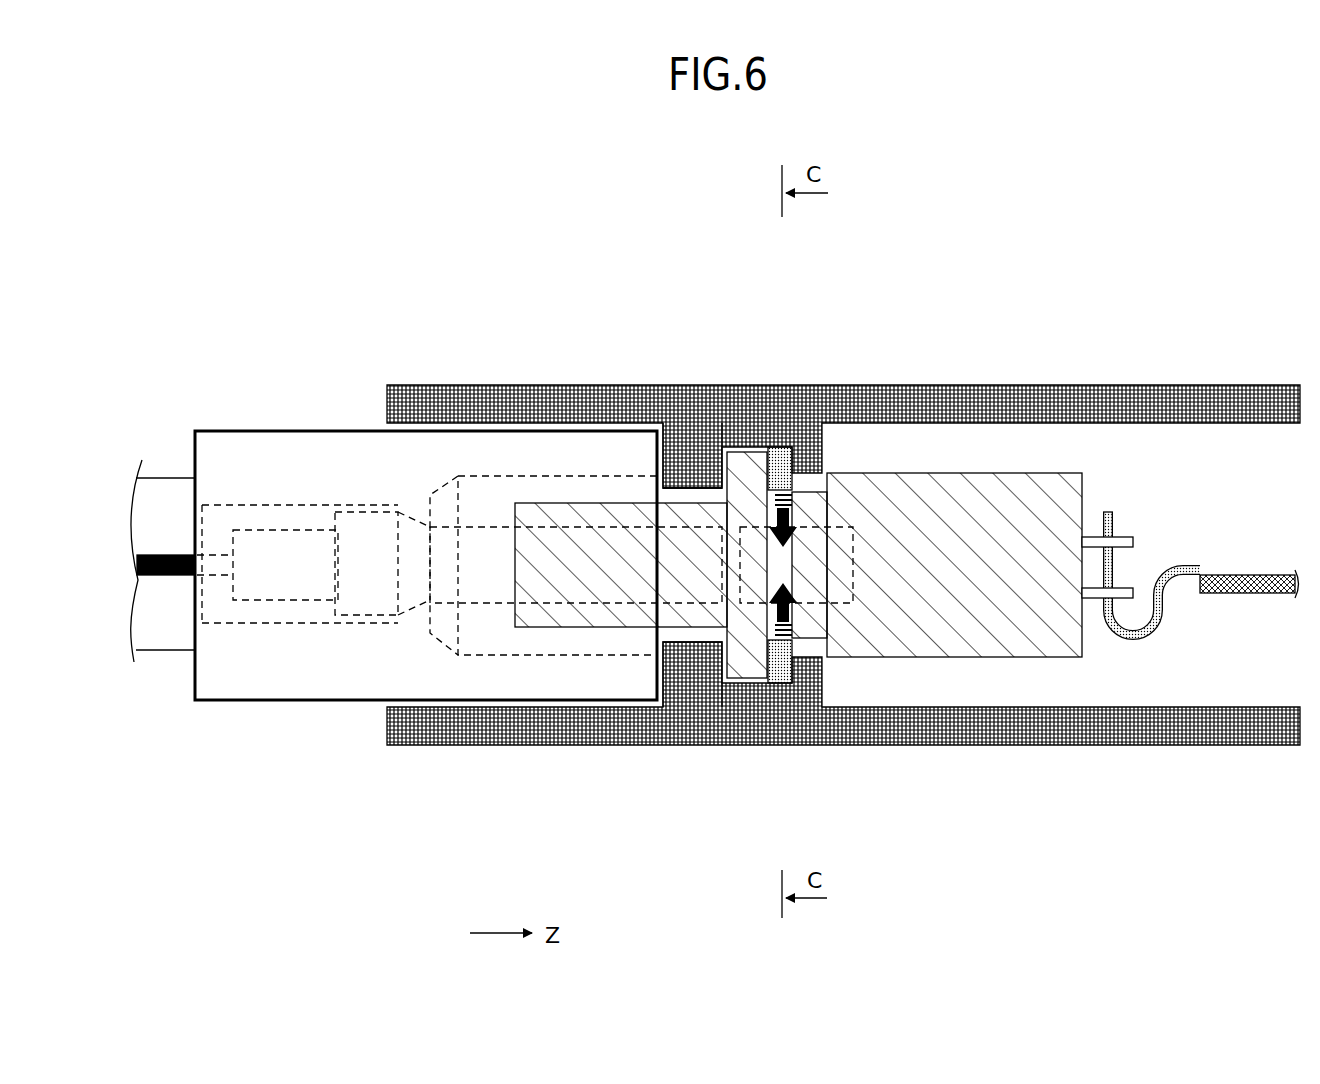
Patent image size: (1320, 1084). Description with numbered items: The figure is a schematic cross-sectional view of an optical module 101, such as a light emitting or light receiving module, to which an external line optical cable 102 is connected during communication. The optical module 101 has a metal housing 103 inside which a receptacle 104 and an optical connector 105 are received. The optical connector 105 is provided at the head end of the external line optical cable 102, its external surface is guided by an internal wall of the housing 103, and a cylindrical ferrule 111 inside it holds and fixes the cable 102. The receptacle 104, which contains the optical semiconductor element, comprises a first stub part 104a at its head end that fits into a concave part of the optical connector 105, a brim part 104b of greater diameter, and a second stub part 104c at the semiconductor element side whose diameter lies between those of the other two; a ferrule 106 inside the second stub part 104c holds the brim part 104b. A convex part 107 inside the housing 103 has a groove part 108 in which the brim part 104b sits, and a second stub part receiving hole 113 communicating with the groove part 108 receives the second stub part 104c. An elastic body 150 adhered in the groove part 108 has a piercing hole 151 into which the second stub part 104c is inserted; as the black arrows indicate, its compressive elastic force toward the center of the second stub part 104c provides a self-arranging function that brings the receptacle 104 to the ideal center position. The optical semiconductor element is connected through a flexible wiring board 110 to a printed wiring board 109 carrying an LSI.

The optical module 101 is at (680, 386).
The external line optical cable 102 is at (162, 475).
The housing 103 is at (995, 395).
The receptacle 104 is at (1005, 657).
The first stub part 104a is at (600, 622).
The brim part 104b is at (750, 662).
The second stub part 104c is at (828, 657).
The optical connector 105 is at (287, 663).
The ferrule 106 is at (853, 527).
The convex part 107 is at (700, 488).
The groove part 108 is at (746, 452).
The printed wiring board 109 is at (1260, 575).
The flexible wiring board 110 is at (1188, 563).
The ferrule 111 is at (592, 520).
The second stub part receiving hole 113 is at (790, 493).
The elastic body 150 is at (775, 677).
The piercing hole 151 is at (785, 660).